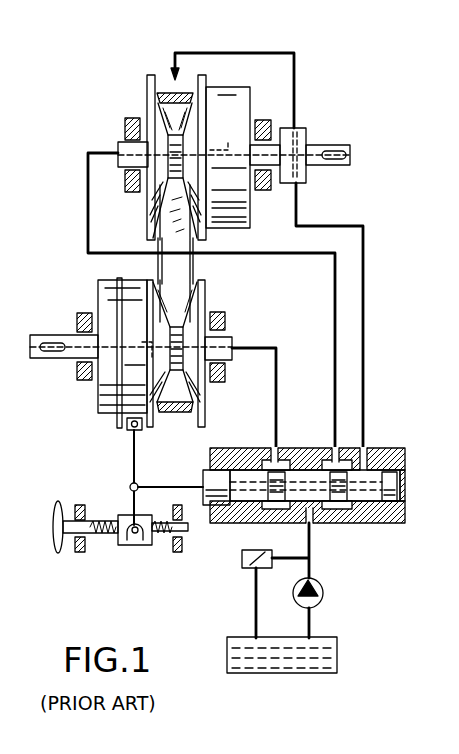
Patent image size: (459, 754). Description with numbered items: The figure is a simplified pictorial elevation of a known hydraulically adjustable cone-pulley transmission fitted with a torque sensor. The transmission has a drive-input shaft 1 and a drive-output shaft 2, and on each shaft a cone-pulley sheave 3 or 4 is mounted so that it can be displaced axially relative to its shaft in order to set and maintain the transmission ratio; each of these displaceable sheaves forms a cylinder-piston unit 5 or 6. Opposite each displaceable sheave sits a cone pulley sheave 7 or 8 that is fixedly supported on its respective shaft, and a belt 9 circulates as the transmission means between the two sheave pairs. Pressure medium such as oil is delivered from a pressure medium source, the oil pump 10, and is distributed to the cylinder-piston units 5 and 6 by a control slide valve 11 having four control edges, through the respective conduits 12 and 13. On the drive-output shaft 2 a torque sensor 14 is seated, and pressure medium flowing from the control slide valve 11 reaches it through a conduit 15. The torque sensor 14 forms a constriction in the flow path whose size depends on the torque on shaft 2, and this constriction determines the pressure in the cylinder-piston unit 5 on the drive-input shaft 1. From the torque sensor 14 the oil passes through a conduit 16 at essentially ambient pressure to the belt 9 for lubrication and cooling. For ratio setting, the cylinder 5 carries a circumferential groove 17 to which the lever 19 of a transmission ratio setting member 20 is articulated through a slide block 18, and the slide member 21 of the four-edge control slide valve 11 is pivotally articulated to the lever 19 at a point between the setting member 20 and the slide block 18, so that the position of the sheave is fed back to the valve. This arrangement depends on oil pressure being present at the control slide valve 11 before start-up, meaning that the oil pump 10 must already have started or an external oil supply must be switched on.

The drive-input shaft 1 is at (37, 343).
The drive-output shaft 2 is at (117, 150).
The cone-pulley sheave 3 is at (193, 363).
The cone-pulley sheave 4 is at (158, 128).
The cylinder-piston unit 5 is at (105, 383).
The cylinder-piston unit 6 is at (228, 88).
The cone pulley sheave 7 is at (206, 398).
The cone pulley sheave 8 is at (147, 88).
The belt 9 is at (172, 92).
The oil pump 10 is at (325, 592).
The control slide valve 11 is at (318, 465).
The conduit 12 is at (277, 350).
The conduit 13 is at (337, 263).
The torque sensor 14 is at (304, 174).
The conduit 15 is at (363, 233).
The conduit 16 is at (270, 52).
The circumferential groove 17 is at (127, 308).
The slide block 18 is at (138, 430).
The lever 19 is at (133, 467).
The transmission ratio setting member 20 is at (126, 554).
The slide member 21 is at (398, 448).